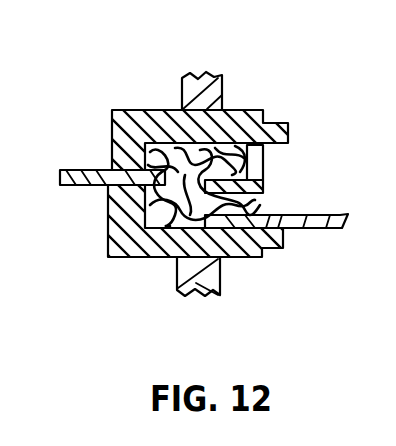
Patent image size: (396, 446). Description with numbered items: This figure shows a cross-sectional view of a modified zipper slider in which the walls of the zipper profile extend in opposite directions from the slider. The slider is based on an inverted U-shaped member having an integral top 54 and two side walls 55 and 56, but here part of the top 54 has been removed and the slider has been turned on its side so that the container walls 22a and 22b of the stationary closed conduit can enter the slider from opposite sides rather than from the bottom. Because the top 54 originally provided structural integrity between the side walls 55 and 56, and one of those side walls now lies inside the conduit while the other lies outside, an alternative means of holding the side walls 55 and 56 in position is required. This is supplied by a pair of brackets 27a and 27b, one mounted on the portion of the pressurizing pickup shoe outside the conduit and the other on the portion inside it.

The wall 22a is at (83, 176).
The wall 22b is at (293, 229).
The bracket 27a is at (214, 74).
The bracket 27b is at (218, 286).
The top 54 is at (264, 159).
The side wall 55 is at (137, 111).
The side wall 56 is at (158, 258).